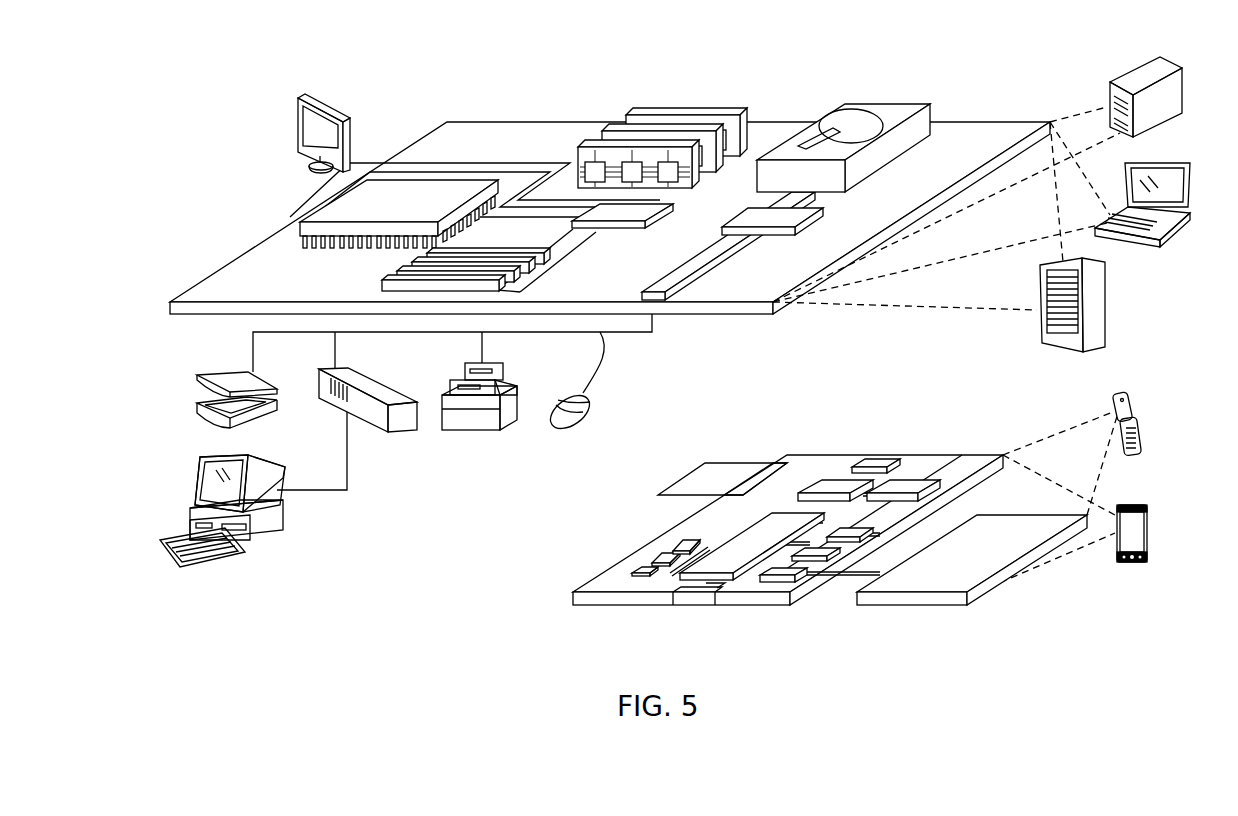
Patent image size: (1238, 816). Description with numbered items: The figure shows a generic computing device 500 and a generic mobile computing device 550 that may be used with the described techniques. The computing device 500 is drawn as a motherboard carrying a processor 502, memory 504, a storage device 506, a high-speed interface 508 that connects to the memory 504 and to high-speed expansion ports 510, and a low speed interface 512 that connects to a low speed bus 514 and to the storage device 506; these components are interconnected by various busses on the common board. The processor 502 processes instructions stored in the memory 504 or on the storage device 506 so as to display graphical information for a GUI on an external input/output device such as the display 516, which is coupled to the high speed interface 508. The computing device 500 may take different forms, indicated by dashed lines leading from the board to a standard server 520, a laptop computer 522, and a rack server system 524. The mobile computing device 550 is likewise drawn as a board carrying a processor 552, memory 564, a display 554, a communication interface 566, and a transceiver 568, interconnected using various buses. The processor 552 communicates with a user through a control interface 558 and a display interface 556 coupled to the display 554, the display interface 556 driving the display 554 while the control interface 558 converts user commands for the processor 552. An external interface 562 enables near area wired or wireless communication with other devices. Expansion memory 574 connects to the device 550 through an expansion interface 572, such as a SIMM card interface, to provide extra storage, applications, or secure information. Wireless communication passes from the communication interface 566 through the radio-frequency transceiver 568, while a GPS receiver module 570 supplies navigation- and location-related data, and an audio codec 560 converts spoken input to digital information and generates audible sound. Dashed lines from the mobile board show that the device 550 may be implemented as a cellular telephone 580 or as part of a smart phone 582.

The computing device 500 is at (410, 82).
The processor 502 is at (326, 203).
The memory 504 is at (689, 117).
The storage device 506 is at (882, 106).
The high-speed interface 508 is at (633, 208).
The high-speed expansion ports 510 is at (406, 270).
The low speed interface 512 is at (751, 211).
The low speed bus 514 is at (656, 290).
The display 516 is at (300, 98).
The standard server 520 is at (1125, 78).
The laptop computer 522 is at (1168, 162).
The rack server system 524 is at (1108, 303).
The mobile computing device 550 is at (534, 613).
The processor 552 is at (730, 555).
The display 554 is at (1003, 528).
The display interface 556 is at (800, 576).
The control interface 558 is at (830, 553).
The audio codec 560 is at (857, 526).
The external interface 562 is at (698, 595).
The memory 564 is at (657, 557).
The communication interface 566 is at (836, 484).
The transceiver 568 is at (903, 481).
The GPS receiver module 570 is at (876, 458).
The expansion interface 572 is at (773, 462).
The expansion memory 574 is at (705, 461).
The cellular telephone 580 is at (1121, 393).
The smart phone 582 is at (1134, 504).